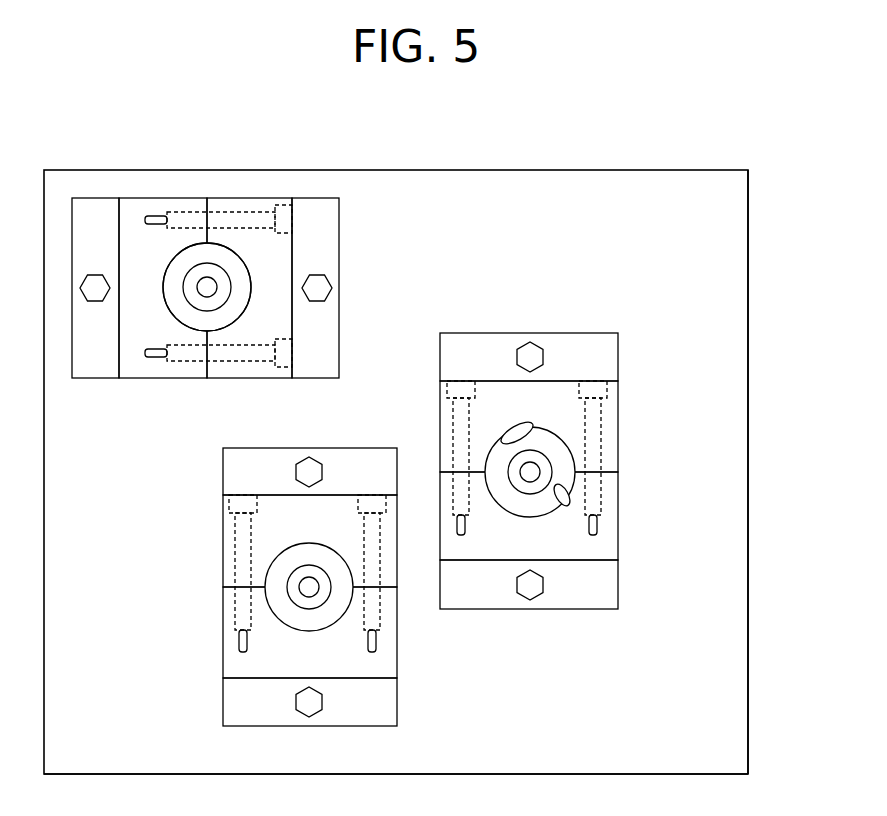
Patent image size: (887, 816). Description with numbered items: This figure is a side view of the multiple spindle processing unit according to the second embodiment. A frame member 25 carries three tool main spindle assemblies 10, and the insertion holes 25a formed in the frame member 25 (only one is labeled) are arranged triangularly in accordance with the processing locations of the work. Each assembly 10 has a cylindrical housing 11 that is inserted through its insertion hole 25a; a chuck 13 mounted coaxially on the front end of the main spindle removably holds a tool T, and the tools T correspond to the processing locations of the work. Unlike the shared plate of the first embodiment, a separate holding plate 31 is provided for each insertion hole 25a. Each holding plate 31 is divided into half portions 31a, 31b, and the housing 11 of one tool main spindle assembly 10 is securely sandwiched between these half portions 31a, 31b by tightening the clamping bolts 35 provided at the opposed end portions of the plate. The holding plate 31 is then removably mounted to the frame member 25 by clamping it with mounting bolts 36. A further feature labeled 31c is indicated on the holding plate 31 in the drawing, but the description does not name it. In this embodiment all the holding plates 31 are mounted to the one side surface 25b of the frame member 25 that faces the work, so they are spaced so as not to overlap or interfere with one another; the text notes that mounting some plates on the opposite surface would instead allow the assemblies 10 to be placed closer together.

The frame member 25 is at (735, 184).
The insertion hole 25a is at (343, 604).
The one side surface 25b is at (740, 341).
The holding plate 31 is at (193, 196).
The half portion 31a is at (258, 206).
The half portion 31b is at (131, 207).
The engaging portion 31c is at (525, 436).
The clamping bolt 35 is at (240, 360).
The mounting bolt 36 is at (88, 289).
The tool main spindle assembly 10 is at (248, 314).
The cylindrical housing 11 is at (253, 292).
The chuck 13 is at (190, 273).
The tool T is at (178, 316).